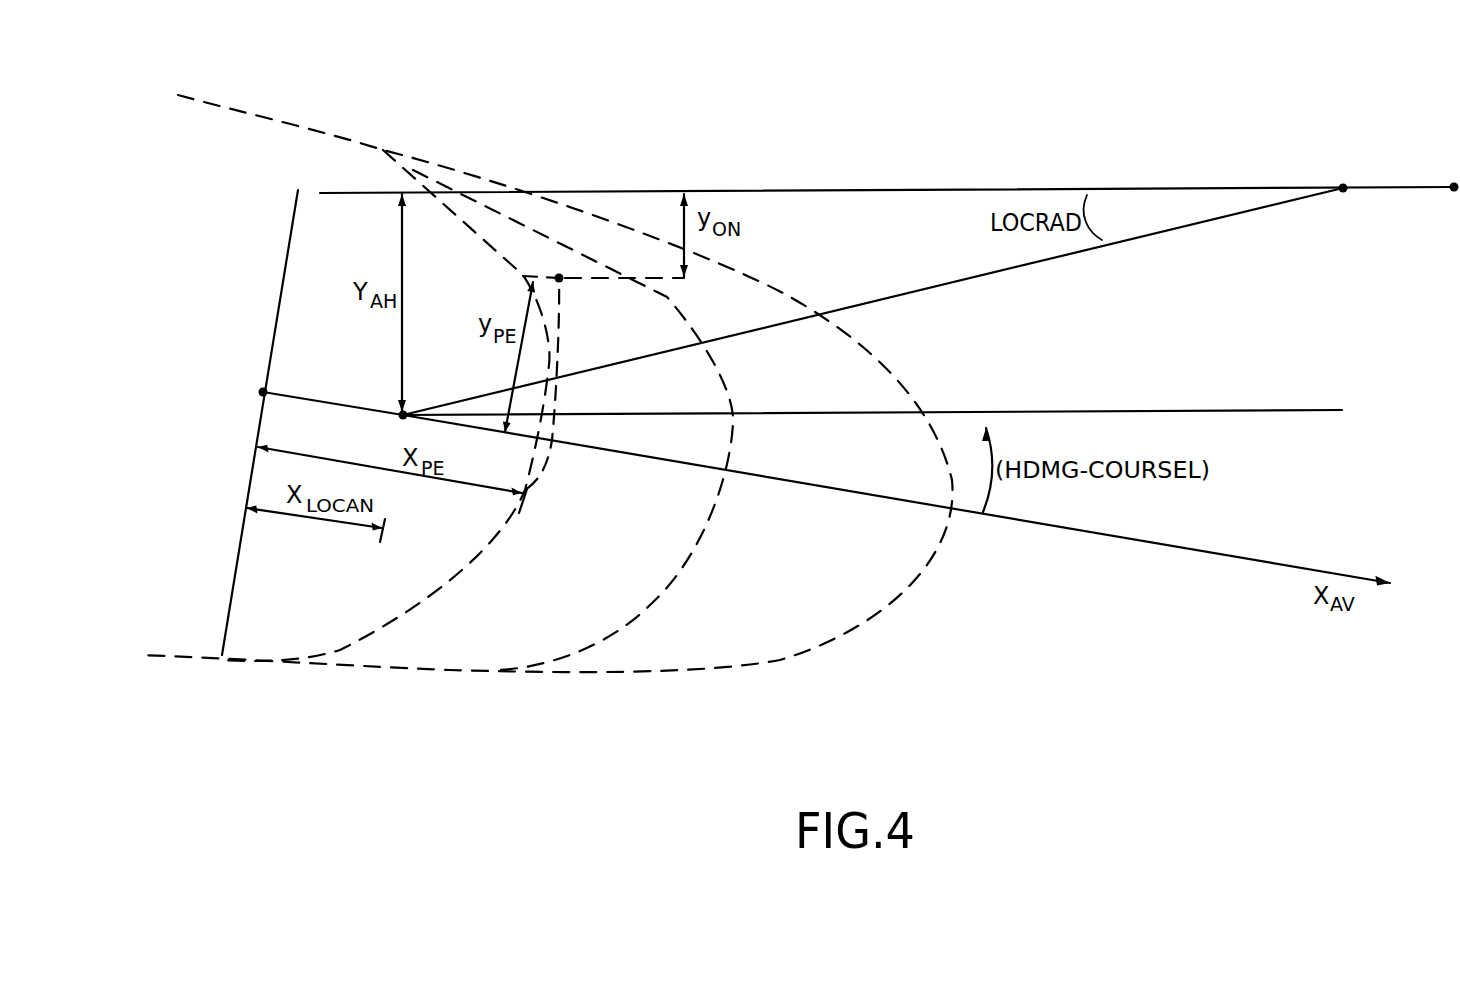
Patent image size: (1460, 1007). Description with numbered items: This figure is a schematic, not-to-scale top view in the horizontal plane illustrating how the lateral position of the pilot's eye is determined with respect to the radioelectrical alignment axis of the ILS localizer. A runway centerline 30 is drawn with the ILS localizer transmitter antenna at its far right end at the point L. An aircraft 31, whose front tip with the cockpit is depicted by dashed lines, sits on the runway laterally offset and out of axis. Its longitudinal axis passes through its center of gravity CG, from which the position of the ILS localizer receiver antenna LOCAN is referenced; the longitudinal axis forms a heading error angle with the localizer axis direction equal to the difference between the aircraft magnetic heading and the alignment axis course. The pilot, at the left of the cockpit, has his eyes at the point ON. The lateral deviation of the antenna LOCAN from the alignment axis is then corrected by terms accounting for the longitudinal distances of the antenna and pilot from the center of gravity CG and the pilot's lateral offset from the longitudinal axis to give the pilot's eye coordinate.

The runway centerline 30 is at (930, 190).
The aircraft 31 is at (288, 118).
The ILS localizer transmitter antenna point L is at (1342, 170).
The center of gravity CG is at (285, 381).
The pilot's eye point ON is at (555, 370).
The ILS localizer receiver antenna LOCAN is at (402, 412).